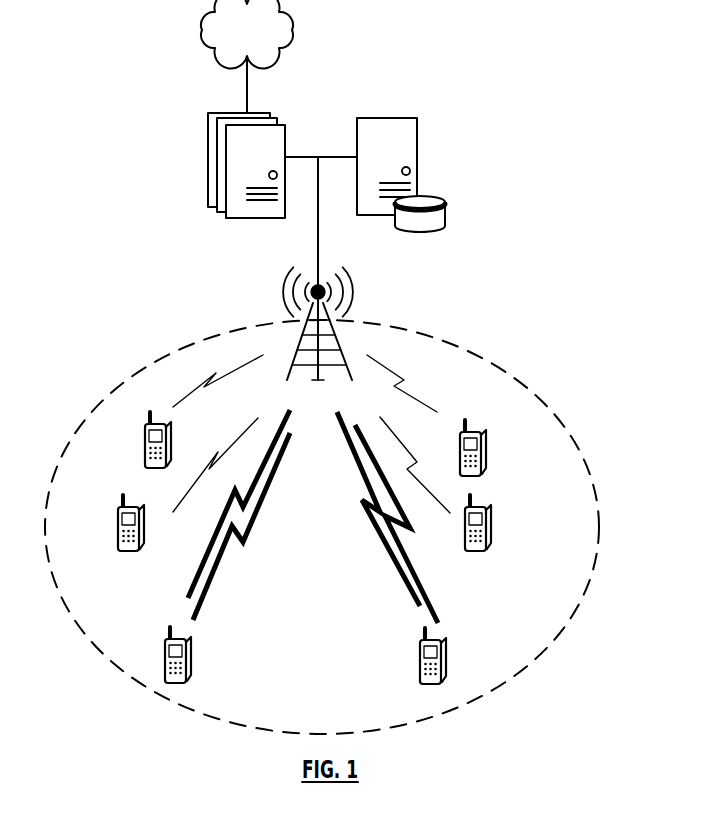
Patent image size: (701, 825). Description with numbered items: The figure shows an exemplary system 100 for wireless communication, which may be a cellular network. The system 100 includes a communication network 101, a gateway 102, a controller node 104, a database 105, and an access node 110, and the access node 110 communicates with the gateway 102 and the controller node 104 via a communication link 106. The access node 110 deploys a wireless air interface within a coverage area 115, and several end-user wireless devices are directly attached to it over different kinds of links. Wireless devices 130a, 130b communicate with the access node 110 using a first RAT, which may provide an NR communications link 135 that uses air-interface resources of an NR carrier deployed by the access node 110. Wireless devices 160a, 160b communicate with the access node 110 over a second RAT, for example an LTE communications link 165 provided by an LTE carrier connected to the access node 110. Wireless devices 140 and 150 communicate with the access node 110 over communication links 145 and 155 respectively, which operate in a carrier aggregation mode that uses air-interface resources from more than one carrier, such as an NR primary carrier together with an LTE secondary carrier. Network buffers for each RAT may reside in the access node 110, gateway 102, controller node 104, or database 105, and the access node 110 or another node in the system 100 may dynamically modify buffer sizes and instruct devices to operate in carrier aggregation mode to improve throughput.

The system 100 is at (349, 58).
The communication network 101 is at (263, 40).
The gateway 102 is at (212, 113).
The controller node 104 is at (417, 118).
The database 105 is at (444, 200).
The communication link 106 is at (318, 233).
The access node 110 is at (303, 347).
The coverage area 115 is at (377, 322).
The NR communications link 135 is at (200, 385).
The LTE communications link 165 is at (407, 380).
The communication link 145 is at (262, 497).
The communication link 155 is at (380, 535).
The end-user wireless device 130a is at (145, 455).
The end-user wireless device 130b is at (133, 548).
The end-user wireless device 160a is at (488, 462).
The end-user wireless device 160b is at (501, 526).
The end-user wireless device 140 is at (167, 668).
The end-user wireless device 150 is at (450, 670).